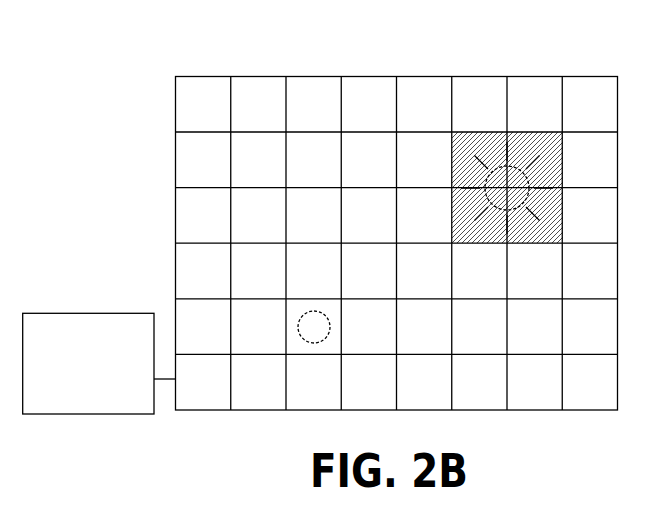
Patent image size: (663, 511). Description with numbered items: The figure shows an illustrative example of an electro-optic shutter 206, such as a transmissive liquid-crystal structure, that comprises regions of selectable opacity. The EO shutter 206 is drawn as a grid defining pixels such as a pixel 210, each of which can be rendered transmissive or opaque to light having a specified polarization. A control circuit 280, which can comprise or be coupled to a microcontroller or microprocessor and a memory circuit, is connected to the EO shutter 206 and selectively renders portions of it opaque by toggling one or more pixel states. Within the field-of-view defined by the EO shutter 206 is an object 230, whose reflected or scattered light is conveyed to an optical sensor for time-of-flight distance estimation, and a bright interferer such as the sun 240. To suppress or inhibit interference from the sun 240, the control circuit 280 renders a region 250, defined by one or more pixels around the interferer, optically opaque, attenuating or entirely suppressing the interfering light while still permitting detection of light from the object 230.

The electro-optic shutter 206 is at (197, 78).
The pixel 210 is at (203, 223).
The object 230 is at (299, 329).
The sun 240 is at (495, 168).
The region 250 is at (463, 160).
The control circuit 280 is at (136, 313).